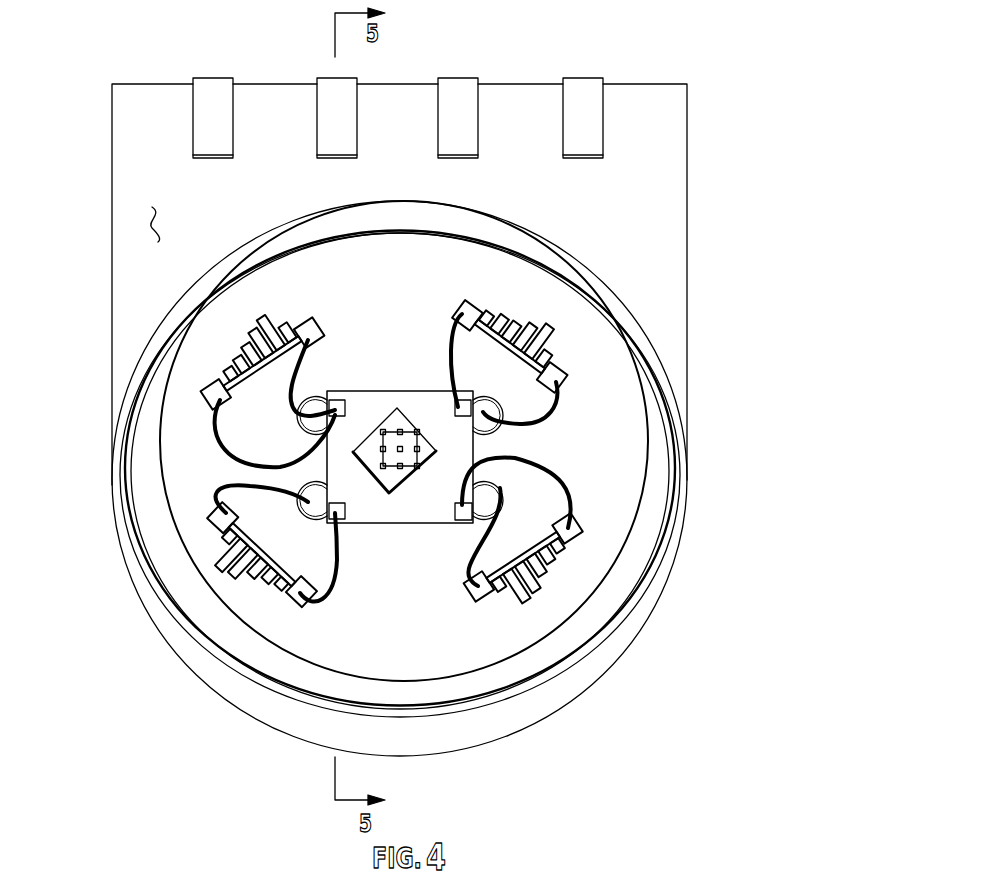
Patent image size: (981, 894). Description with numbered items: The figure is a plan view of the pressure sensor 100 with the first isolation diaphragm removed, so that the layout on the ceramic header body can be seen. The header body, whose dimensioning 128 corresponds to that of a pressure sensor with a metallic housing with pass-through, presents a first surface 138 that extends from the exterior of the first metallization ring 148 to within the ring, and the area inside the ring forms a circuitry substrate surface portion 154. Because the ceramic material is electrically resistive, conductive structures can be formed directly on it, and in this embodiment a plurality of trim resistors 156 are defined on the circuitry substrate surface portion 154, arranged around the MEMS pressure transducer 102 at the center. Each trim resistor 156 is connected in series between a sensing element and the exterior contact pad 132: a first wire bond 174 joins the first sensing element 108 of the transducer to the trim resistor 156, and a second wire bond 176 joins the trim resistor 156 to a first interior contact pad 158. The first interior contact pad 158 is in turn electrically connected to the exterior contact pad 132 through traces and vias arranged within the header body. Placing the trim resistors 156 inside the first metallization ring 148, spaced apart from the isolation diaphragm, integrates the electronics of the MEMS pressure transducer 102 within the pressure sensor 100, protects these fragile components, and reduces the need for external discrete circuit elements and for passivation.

The pressure sensor 100 is at (137, 665).
The MEMS pressure transducer 102 is at (357, 490).
The first sensing element 108 is at (457, 416).
The dimensioning 128 is at (640, 138).
The exterior contact pad 132 is at (582, 100).
The first surface 138 is at (156, 226).
The first metallization ring 148 is at (152, 398).
The circuitry substrate surface portion 154 is at (355, 300).
The trim resistor 156 is at (545, 325).
The first interior contact pad 158 is at (548, 466).
The first wire bond 174 is at (435, 330).
The second wire bond 176 is at (545, 422).